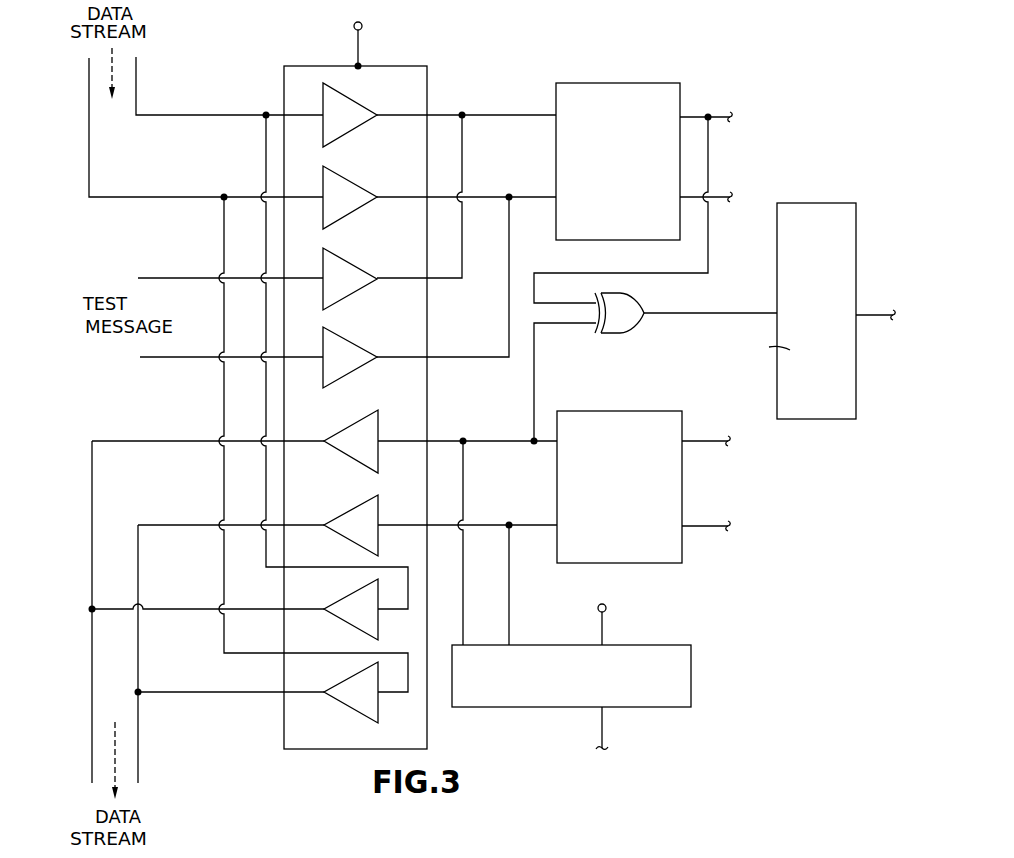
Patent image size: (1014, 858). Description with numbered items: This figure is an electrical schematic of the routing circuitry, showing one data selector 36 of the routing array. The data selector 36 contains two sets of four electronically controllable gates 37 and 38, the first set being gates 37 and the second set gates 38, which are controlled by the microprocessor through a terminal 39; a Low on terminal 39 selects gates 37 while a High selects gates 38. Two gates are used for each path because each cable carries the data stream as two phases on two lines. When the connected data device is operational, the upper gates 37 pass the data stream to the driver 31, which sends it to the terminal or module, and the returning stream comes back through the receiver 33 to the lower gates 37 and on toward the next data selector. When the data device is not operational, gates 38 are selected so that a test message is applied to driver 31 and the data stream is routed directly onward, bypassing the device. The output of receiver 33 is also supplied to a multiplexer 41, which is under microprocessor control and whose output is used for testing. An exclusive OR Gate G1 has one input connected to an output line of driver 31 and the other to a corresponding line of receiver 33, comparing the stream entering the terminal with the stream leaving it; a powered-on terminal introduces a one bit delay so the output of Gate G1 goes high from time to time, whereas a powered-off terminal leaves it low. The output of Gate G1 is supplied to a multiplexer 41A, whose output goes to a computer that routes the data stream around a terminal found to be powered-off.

The driver 31 is at (650, 83).
The receiver 33 is at (650, 411).
The data selector 36 is at (426, 66).
The gates of the first set 37 is at (346, 139).
The gates of the second set 38 is at (346, 300).
The terminal 39 is at (362, 28).
The multiplexer 41 is at (662, 645).
The multiplexer 41A is at (857, 363).
The exclusive OR Gate G1 is at (636, 289).